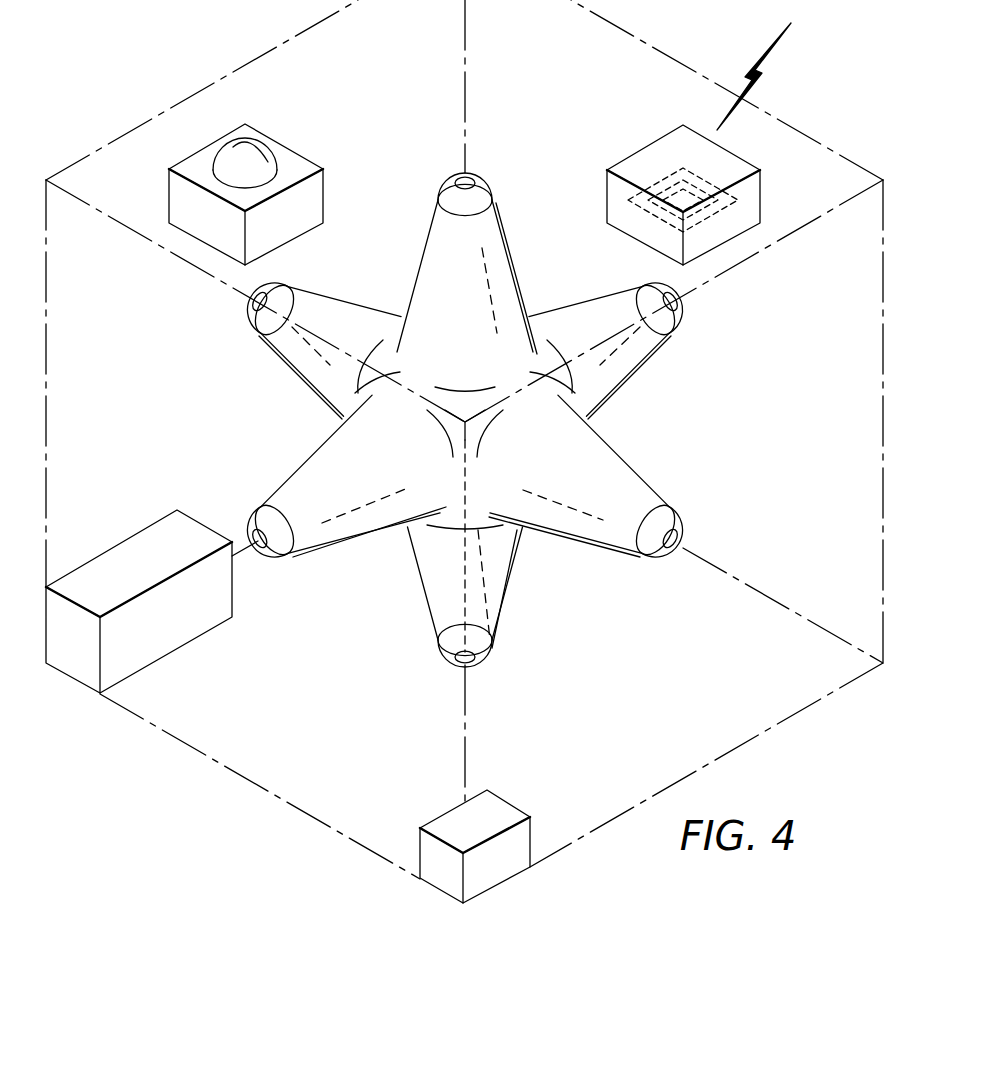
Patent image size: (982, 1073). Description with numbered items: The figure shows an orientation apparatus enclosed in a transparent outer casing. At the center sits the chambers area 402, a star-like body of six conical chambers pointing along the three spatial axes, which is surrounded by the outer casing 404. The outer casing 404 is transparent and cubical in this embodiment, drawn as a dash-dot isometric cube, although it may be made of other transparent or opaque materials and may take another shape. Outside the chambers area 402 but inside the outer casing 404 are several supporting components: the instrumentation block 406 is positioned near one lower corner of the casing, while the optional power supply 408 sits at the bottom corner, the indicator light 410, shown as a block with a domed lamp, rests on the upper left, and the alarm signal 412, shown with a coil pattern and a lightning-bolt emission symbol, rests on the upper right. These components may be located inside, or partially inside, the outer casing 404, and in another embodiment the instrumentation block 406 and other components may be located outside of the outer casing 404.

The chambers area 402 is at (413, 596).
The outer casing 404 is at (247, 54).
The instrumentation block 406 is at (125, 540).
The power supply 408 is at (512, 800).
The indicator light 410 is at (286, 145).
The alarm signal 412 is at (642, 145).